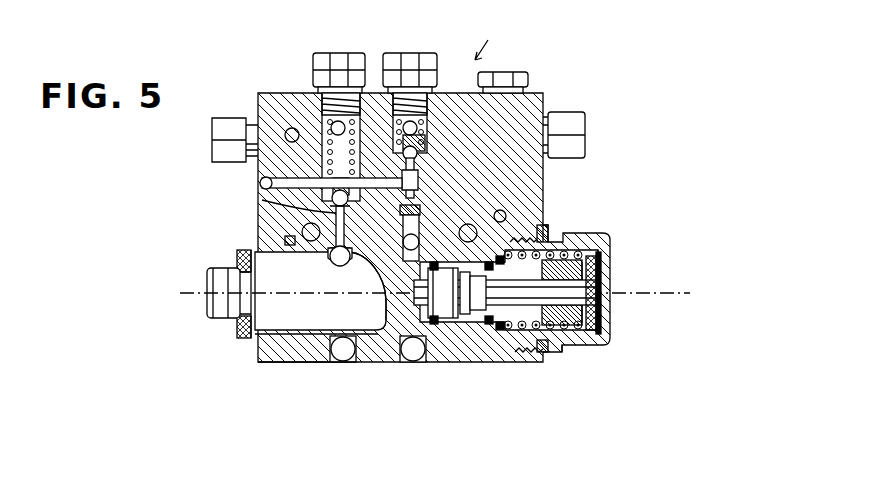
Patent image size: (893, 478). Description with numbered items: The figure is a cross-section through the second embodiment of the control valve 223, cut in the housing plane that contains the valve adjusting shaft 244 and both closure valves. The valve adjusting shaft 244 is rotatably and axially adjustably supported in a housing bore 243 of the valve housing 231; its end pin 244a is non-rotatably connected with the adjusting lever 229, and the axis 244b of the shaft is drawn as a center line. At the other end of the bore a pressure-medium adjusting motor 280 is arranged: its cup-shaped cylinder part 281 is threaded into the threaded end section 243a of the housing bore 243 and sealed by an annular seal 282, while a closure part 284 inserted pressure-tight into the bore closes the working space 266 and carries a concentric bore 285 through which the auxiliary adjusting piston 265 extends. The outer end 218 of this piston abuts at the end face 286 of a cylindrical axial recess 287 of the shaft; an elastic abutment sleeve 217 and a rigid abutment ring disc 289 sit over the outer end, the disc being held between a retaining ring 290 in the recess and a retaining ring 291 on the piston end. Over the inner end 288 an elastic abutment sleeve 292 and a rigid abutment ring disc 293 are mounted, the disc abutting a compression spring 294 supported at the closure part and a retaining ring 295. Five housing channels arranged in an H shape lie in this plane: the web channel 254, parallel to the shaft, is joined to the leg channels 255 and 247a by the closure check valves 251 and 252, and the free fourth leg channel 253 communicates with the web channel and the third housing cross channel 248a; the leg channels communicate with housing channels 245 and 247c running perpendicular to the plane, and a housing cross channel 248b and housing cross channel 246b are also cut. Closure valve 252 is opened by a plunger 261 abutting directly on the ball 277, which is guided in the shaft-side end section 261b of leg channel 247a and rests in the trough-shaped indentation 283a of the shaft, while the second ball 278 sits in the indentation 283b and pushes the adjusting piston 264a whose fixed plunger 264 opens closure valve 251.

The elastic abutment sleeve 217 is at (488, 322).
The outer end of adjusting piston 218 is at (422, 355).
The control valve 223 is at (490, 38).
The adjusting lever 229 is at (244, 338).
The valve housing 231 is at (540, 92).
The housing bore 243 is at (312, 362).
The threaded end section 243a is at (507, 292).
The valve adjusting shaft 244 is at (290, 362).
The end pin 244a is at (207, 282).
The axis 244b is at (192, 293).
The housing channel 245 is at (428, 122).
The housing cross channel 246b is at (405, 228).
The leg channel 247a is at (260, 182).
The housing channel 247c is at (262, 204).
The third housing cross channel 248a is at (337, 128).
The housing cross channel 248b is at (290, 128).
The closure check valve 251 is at (436, 155).
The closure check valve 252 is at (350, 210).
The fourth leg channel 253 is at (318, 90).
The web channel 254 is at (360, 180).
The leg channel 255 is at (428, 100).
The plunger 261 is at (300, 228).
The shaft-side end section 261b is at (330, 252).
The fixed plunger 264 is at (418, 172).
The adjusting piston 264a is at (494, 196).
The auxiliary adjusting piston 265 is at (545, 355).
The working space 266 is at (600, 258).
The ball 277 is at (355, 254).
The second ball 278 is at (404, 268).
The pressure-medium adjusting motor 280 is at (573, 232).
The cylinder part 281 is at (600, 302).
The annular seal 282 is at (540, 352).
The indentation 283a is at (320, 293).
The indentation 283b is at (392, 356).
The closure part 284 is at (500, 330).
The concentric bore 285 is at (540, 190).
The end face 286 is at (412, 350).
The cylindrical axial recess 287 is at (425, 262).
The inner end of adjusting piston 288 is at (596, 280).
The rigid abutment ring disc 289 is at (440, 322).
The retaining ring 290 is at (464, 322).
The retaining ring 291 is at (451, 293).
The elastic abutment sleeve 292 is at (595, 345).
The rigid abutment ring disc 293 is at (590, 328).
The compression spring 294 is at (570, 352).
The retaining ring 295 is at (598, 320).